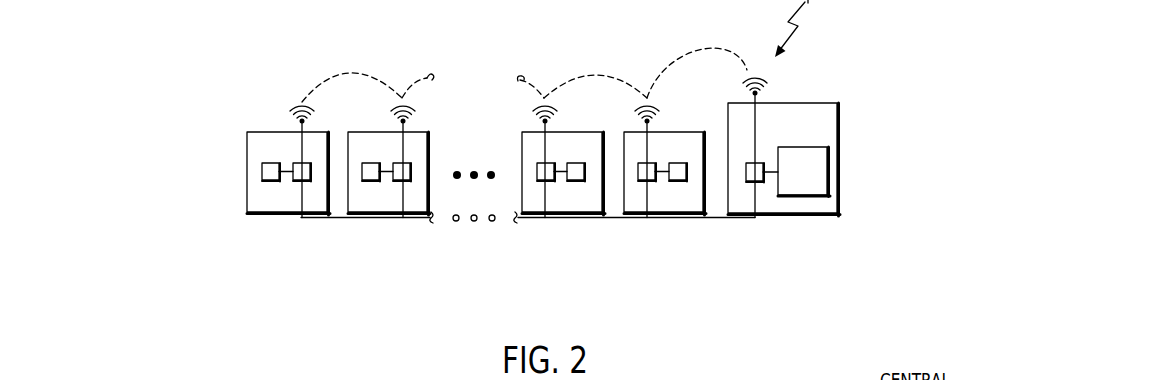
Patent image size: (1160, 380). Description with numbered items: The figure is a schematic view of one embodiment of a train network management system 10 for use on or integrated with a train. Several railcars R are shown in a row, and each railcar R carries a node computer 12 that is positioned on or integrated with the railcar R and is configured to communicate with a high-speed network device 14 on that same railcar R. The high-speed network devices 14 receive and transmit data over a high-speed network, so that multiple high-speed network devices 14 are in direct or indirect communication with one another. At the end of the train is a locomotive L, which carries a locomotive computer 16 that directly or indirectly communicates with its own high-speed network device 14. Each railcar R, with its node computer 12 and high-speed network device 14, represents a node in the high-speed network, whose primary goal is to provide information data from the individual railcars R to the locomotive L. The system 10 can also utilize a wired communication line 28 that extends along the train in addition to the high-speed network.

The train network management system 10 is at (827, 74).
The node computer 12 is at (698, 247).
The high-speed network device 14 is at (294, 180).
The locomotive computer 16 is at (827, 176).
The wired communication line 28 is at (432, 224).
The locomotive L is at (838, 120).
The railcar R is at (268, 132).